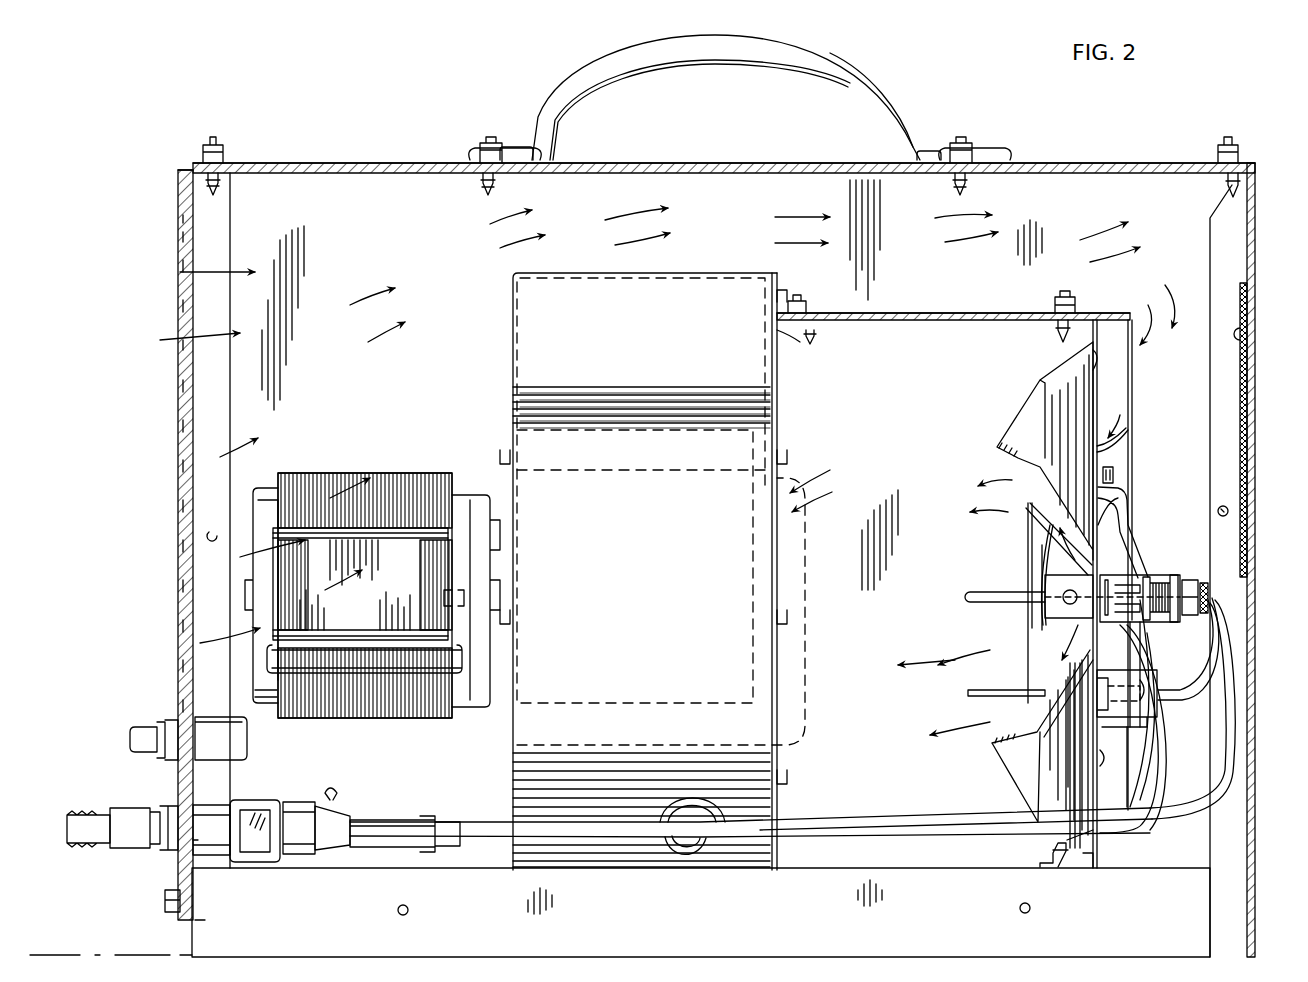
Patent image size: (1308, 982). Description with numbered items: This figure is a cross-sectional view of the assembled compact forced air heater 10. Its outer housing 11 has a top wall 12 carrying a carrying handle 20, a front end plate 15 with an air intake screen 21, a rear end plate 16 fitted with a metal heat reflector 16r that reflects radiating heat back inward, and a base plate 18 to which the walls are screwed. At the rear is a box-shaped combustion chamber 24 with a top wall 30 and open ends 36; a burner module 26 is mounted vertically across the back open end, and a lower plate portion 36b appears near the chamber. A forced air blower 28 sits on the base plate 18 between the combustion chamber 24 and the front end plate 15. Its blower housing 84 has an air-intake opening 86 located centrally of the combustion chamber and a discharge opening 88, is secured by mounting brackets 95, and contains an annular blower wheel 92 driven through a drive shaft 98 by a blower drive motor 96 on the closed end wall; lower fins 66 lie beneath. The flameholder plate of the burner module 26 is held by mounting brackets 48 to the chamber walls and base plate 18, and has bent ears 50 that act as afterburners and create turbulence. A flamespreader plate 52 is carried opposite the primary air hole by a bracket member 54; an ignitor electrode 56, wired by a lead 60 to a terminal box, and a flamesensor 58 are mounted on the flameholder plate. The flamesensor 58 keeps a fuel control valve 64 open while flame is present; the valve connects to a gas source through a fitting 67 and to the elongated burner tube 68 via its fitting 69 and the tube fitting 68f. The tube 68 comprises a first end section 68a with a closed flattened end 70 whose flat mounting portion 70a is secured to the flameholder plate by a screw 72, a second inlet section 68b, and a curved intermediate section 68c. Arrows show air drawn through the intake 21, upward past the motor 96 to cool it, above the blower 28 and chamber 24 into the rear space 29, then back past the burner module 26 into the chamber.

The forced air heater 10 is at (118, 240).
The outer housing 11 is at (275, 163).
The top wall 12 is at (368, 163).
The front end plate 15 is at (178, 545).
The rear end plate 16 is at (1256, 243).
The metal heat reflector 16r is at (1243, 333).
The base plate 18 is at (1210, 902).
The carrying handle 20 is at (865, 78).
The air intake screen 21 is at (178, 341).
The rear combustion chamber 24 is at (935, 312).
The burner module 26 is at (1000, 438).
The forced air blower 28 is at (505, 275).
The rear space 29 is at (1200, 478).
The top wall 30 is at (868, 313).
The open ends 36 is at (1118, 380).
The mounting plate lower portion 36b is at (780, 436).
The mounting brackets 48 is at (1062, 333).
The ears 50 is at (1052, 405).
The flamespreader plate 52 is at (1045, 558).
The bracket member 54 is at (1027, 645).
The ignitor electrode 56 is at (970, 690).
The flamesensor 58 is at (997, 596).
The lead 60 is at (1190, 657).
The fuel control valve 64 is at (300, 858).
The lower heat sink fins 66 is at (870, 812).
The fitting 67 is at (100, 833).
The elongated burner tube 68 is at (1200, 560).
The first end section 68a is at (1150, 755).
The second elongated inlet section 68b is at (968, 832).
The curved right-angle intermediate tube section 68c is at (1140, 818).
The fitting 68f is at (328, 800).
The fitting 69 is at (255, 862).
The closed flattened end 70 is at (1122, 518).
The flat mounting portion 70a is at (1105, 450).
The screw 72 is at (1115, 478).
The blower housing 84 is at (718, 290).
The air-intake opening 86 is at (790, 603).
The discharge opening 88 is at (777, 372).
The blower wheel 92 is at (565, 432).
The mounting brackets 95 is at (785, 345).
The blower drive motor 96 is at (392, 490).
The drive shaft 98 is at (520, 600).